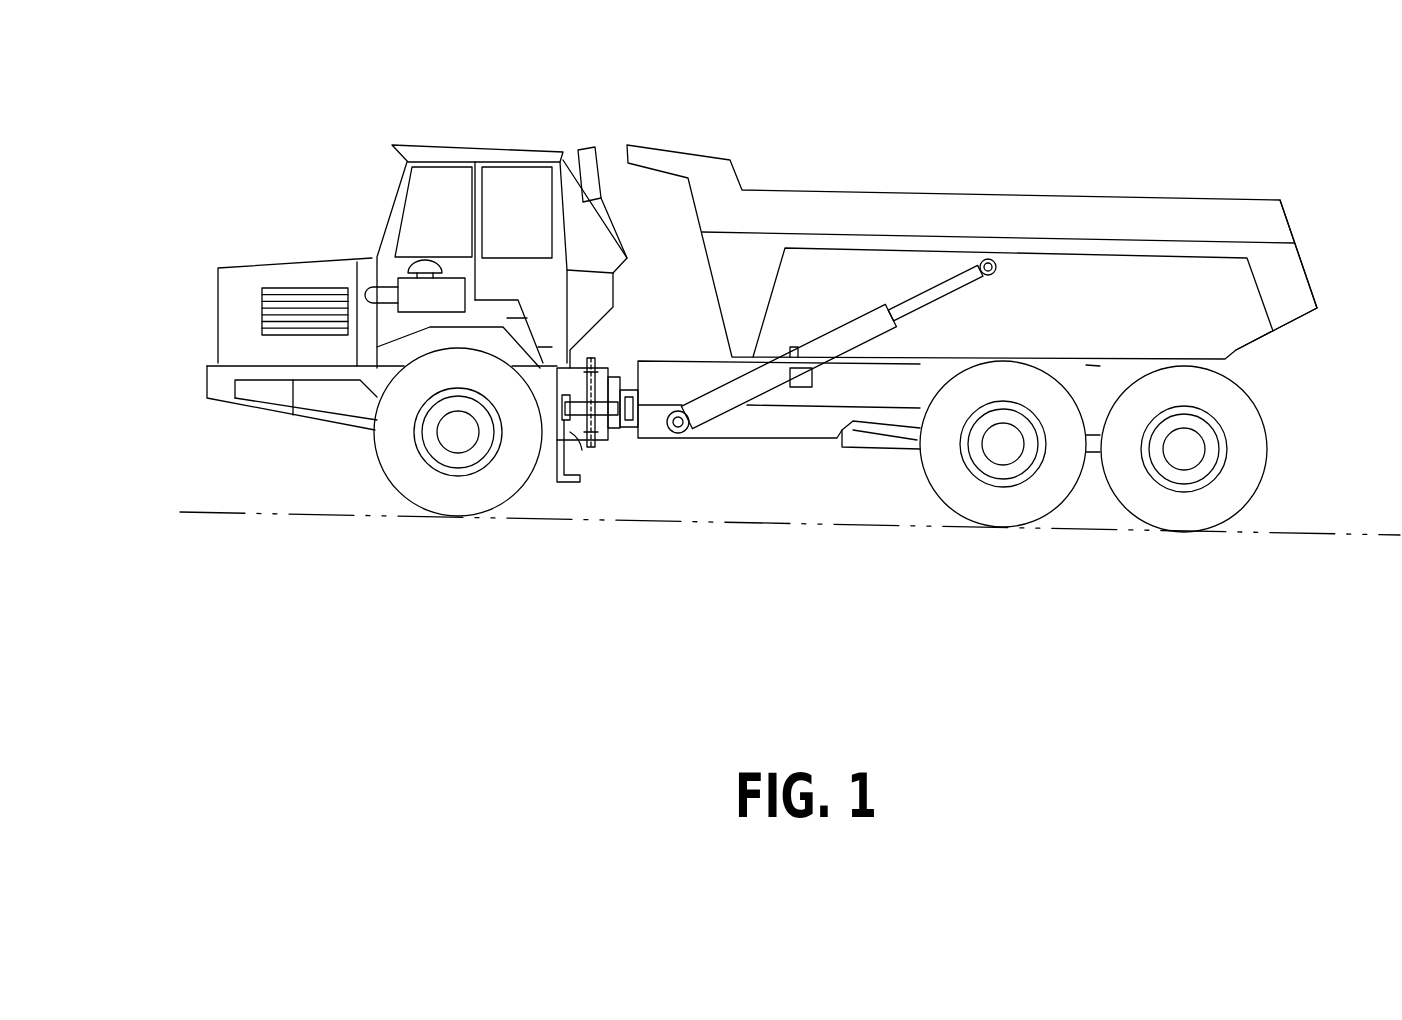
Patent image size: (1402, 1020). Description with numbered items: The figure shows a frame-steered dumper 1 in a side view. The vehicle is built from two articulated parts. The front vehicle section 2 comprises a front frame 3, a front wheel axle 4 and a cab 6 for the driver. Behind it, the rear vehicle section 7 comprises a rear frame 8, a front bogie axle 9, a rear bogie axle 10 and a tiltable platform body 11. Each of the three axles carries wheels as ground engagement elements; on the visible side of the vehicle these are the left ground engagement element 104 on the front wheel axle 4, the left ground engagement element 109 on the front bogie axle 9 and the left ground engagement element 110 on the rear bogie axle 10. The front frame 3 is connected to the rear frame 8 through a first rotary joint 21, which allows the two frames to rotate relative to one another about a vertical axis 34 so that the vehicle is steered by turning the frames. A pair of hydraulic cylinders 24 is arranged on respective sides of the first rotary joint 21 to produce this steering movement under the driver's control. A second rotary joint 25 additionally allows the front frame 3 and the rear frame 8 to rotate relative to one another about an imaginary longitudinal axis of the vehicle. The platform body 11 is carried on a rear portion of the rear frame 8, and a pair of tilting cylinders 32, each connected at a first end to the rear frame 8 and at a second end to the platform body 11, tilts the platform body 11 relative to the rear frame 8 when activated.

The frame-steered dumper 1 is at (788, 348).
The front vehicle section 2 is at (461, 342).
The front frame 3 is at (565, 480).
The front wheel axle 4 is at (458, 432).
The cab 6 is at (535, 152).
The rear vehicle section 7 is at (1012, 222).
The rear frame 8 is at (753, 427).
The front bogie axle 9 is at (1012, 531).
The rear bogie axle 10 is at (1202, 533).
The tiltable platform body 11 is at (1275, 273).
The first rotary joint 21 is at (655, 521).
The hydraulic cylinders 24 is at (610, 418).
The second rotary joint 25 is at (720, 500).
The tilting cylinders 32 is at (753, 383).
The vertical axis 34 is at (581, 501).
The left ground engagement element 104 is at (393, 457).
The left ground engagement element 109 is at (1045, 511).
The left ground engagement element 110 is at (1227, 515).